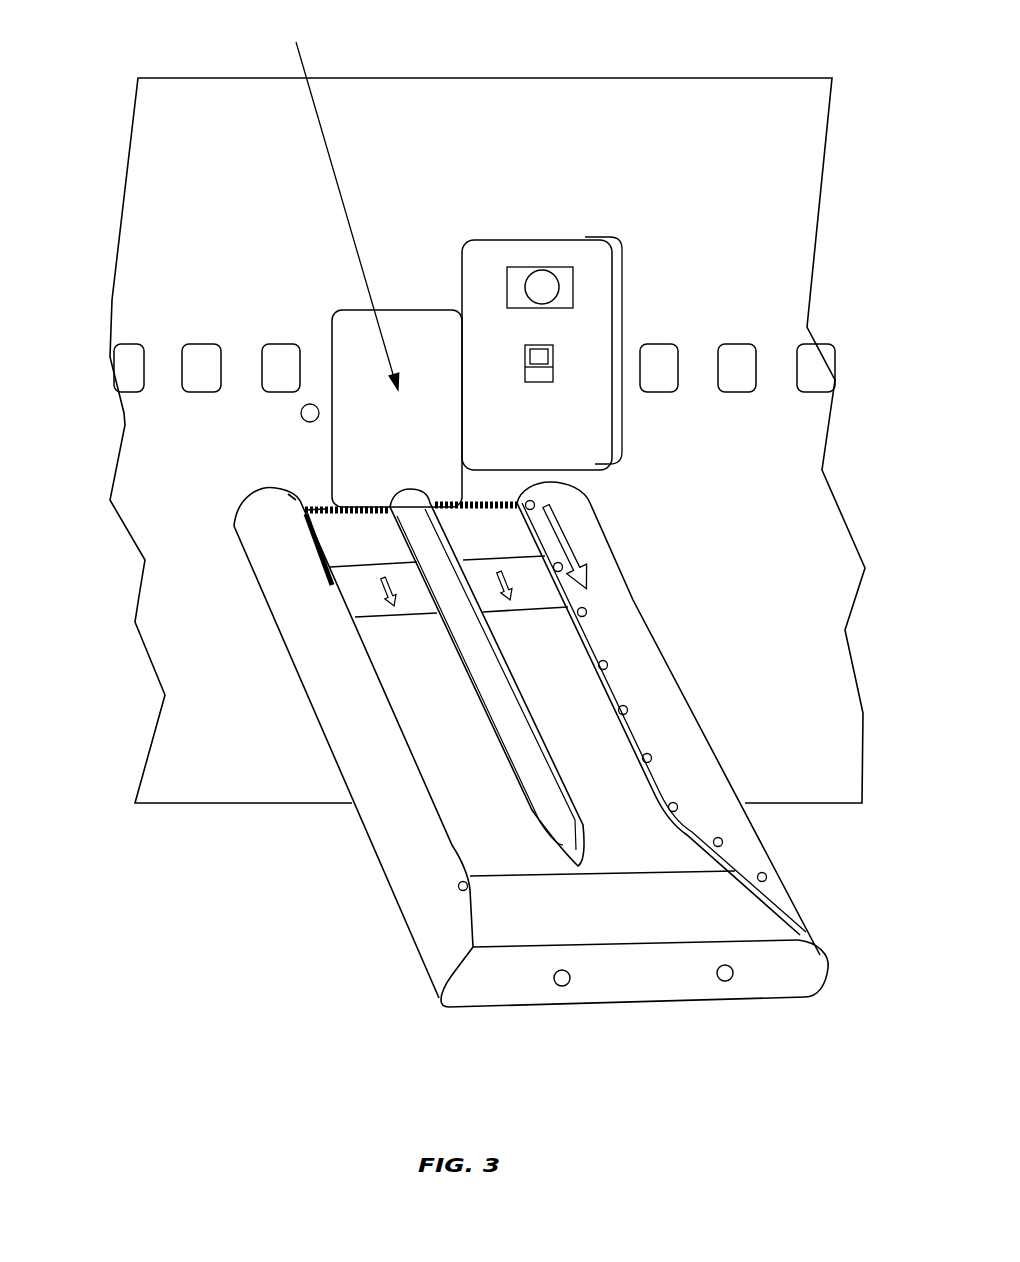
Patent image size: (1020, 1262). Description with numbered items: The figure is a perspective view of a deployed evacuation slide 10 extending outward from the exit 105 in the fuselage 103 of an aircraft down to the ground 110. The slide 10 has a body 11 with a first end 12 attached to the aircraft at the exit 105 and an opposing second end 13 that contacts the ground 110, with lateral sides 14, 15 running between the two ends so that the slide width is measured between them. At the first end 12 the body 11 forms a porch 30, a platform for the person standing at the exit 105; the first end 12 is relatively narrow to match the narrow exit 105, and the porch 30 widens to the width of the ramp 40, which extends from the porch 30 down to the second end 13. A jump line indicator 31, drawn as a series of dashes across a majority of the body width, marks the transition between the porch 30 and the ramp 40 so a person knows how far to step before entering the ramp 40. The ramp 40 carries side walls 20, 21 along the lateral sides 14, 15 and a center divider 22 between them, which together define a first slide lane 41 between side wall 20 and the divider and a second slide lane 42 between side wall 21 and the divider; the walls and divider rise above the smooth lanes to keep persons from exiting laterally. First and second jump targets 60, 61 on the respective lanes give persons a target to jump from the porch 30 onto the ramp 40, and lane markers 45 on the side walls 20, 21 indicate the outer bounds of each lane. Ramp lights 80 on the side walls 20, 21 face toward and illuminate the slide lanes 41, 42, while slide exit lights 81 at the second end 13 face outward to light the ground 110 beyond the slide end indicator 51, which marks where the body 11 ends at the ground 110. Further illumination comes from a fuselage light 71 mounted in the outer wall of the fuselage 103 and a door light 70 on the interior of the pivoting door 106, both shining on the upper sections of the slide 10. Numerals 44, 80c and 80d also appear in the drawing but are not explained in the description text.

The slide 10 is at (718, 585).
The body 11 is at (333, 680).
The first end 12 is at (323, 510).
The second end 13 is at (745, 998).
The lateral side 14 is at (700, 718).
The lateral side 15 is at (417, 953).
The side wall 20 is at (602, 583).
The side wall 21 is at (370, 767).
The center divider 22 is at (535, 753).
The porch 30 is at (295, 505).
The jump line indicator 31 is at (363, 507).
The ramp 40 is at (613, 787).
The first slide lane 41 is at (603, 752).
The second slide lane 42 is at (433, 703).
The upper edge 44 is at (423, 535).
The lane marker 45 is at (477, 653).
The slide end indicator 51 is at (513, 930).
The first jump target 60 is at (533, 585).
The second jump target 61 is at (363, 598).
The door light 70 is at (532, 275).
The fuselage light 71 is at (295, 412).
The ramp lights 80 is at (536, 503).
The hole 80c is at (766, 876).
The hole 80d is at (458, 889).
The slide exit lights 81 is at (560, 987).
The fuselage 103 is at (747, 123).
The exit 105 is at (342, 203).
The door 106 is at (585, 252).
The ground 110 is at (857, 1099).